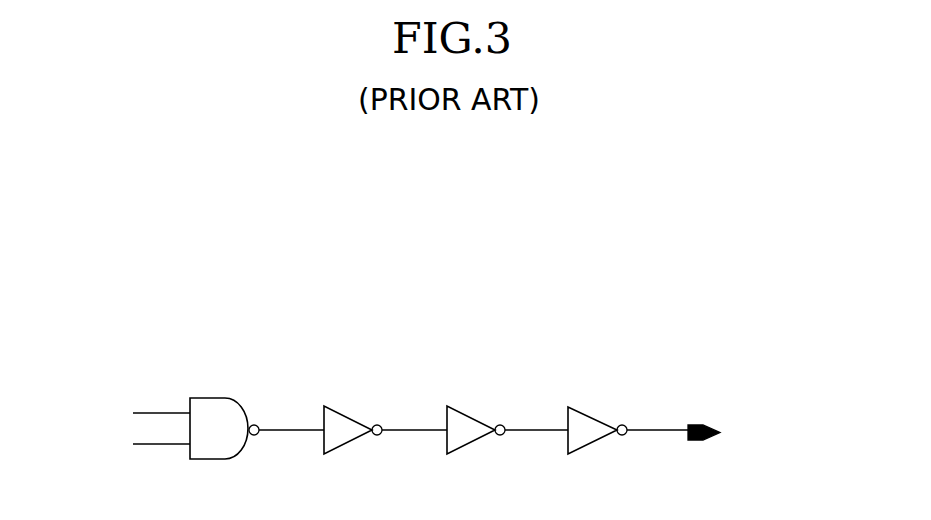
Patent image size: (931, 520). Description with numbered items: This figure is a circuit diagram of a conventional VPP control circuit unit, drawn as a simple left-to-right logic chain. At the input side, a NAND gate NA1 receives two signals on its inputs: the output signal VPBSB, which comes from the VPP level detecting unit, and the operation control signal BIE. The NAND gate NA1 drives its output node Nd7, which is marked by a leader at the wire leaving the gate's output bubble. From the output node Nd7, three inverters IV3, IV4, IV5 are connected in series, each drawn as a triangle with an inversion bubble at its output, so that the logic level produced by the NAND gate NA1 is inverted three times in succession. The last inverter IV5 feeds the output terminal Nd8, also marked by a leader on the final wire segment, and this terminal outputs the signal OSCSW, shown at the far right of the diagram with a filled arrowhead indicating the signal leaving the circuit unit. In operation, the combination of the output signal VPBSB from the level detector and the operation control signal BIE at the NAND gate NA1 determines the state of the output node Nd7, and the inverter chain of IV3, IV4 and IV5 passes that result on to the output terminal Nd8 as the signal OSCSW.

The NAND gate NA1 is at (224, 441).
The inverter IV3 is at (353, 442).
The inverter IV4 is at (476, 442).
The inverter IV5 is at (597, 441).
The output node Nd7 is at (303, 428).
The output terminal Nd8 is at (657, 430).
The output signal VPBSB is at (124, 413).
The operation control signal BIE is at (136, 444).
The signal OSCSW is at (740, 433).